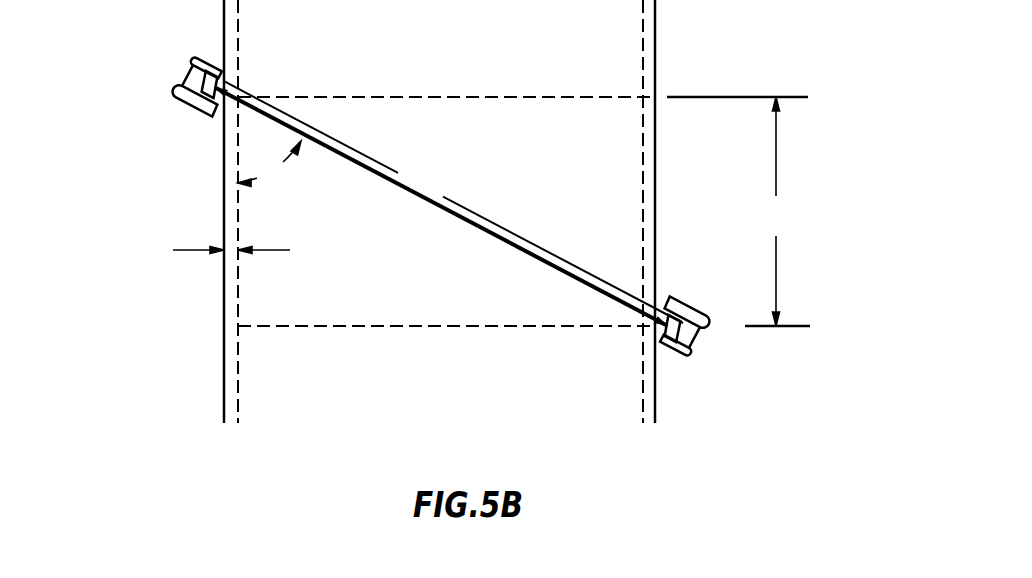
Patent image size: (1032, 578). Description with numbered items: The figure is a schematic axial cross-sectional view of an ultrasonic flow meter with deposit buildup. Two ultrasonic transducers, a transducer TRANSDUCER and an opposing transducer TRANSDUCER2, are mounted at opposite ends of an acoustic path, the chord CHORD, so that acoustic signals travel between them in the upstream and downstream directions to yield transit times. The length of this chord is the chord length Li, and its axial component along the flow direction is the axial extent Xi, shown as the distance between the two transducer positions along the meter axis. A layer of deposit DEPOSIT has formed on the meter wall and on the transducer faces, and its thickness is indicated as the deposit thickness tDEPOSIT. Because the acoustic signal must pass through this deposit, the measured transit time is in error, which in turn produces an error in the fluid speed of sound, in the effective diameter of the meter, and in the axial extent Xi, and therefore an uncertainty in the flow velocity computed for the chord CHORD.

The deposit DEPOSIT is at (212, 100).
The deposit thickness tDEPOSIT is at (175, 243).
The transducer TRANSDUCER is at (686, 340).
The transducer TRANSDUCER2 is at (202, 86).
The chord i CHORD is at (462, 222).
The chord length Li is at (453, 202).
The axial extent Xi is at (738, 211).